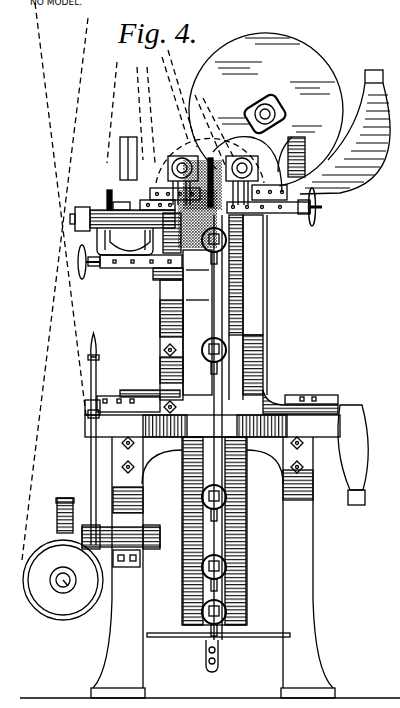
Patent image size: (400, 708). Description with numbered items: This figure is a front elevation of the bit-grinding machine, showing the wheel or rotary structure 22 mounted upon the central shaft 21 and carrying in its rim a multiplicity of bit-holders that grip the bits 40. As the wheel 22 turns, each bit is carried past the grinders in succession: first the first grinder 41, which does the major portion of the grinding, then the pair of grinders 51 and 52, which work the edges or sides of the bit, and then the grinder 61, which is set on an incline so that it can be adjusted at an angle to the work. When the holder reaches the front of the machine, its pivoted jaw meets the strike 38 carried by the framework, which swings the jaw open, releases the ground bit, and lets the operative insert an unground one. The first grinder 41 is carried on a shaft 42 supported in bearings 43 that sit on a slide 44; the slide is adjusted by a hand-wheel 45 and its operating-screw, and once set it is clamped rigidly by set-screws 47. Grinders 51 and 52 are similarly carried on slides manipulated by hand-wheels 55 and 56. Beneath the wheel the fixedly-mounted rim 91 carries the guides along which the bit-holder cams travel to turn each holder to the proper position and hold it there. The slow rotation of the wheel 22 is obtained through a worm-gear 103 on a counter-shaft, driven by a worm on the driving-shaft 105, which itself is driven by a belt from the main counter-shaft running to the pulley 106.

The central shaft 21 is at (86, 407).
The wheel or rotary structure 22 is at (187, 304).
The strike 38 is at (200, 391).
The bits 40 is at (215, 670).
The first grinder 41 is at (213, 243).
The shaft 42 is at (75, 225).
The bearings 43 is at (107, 210).
The slide 44 is at (110, 258).
The hand-wheel 45 is at (77, 267).
The set-screws 47 is at (117, 264).
The grinder 51 is at (255, 205).
The grinder 52 is at (180, 138).
The hand-wheel 55 is at (316, 210).
The hand-wheel 56 is at (119, 160).
The grinder 61 is at (247, 117).
The fixedly-mounted rim 91 is at (246, 502).
The worm-gear 103 is at (64, 497).
The driving-shaft 105 is at (67, 587).
The pulley 106 is at (43, 600).